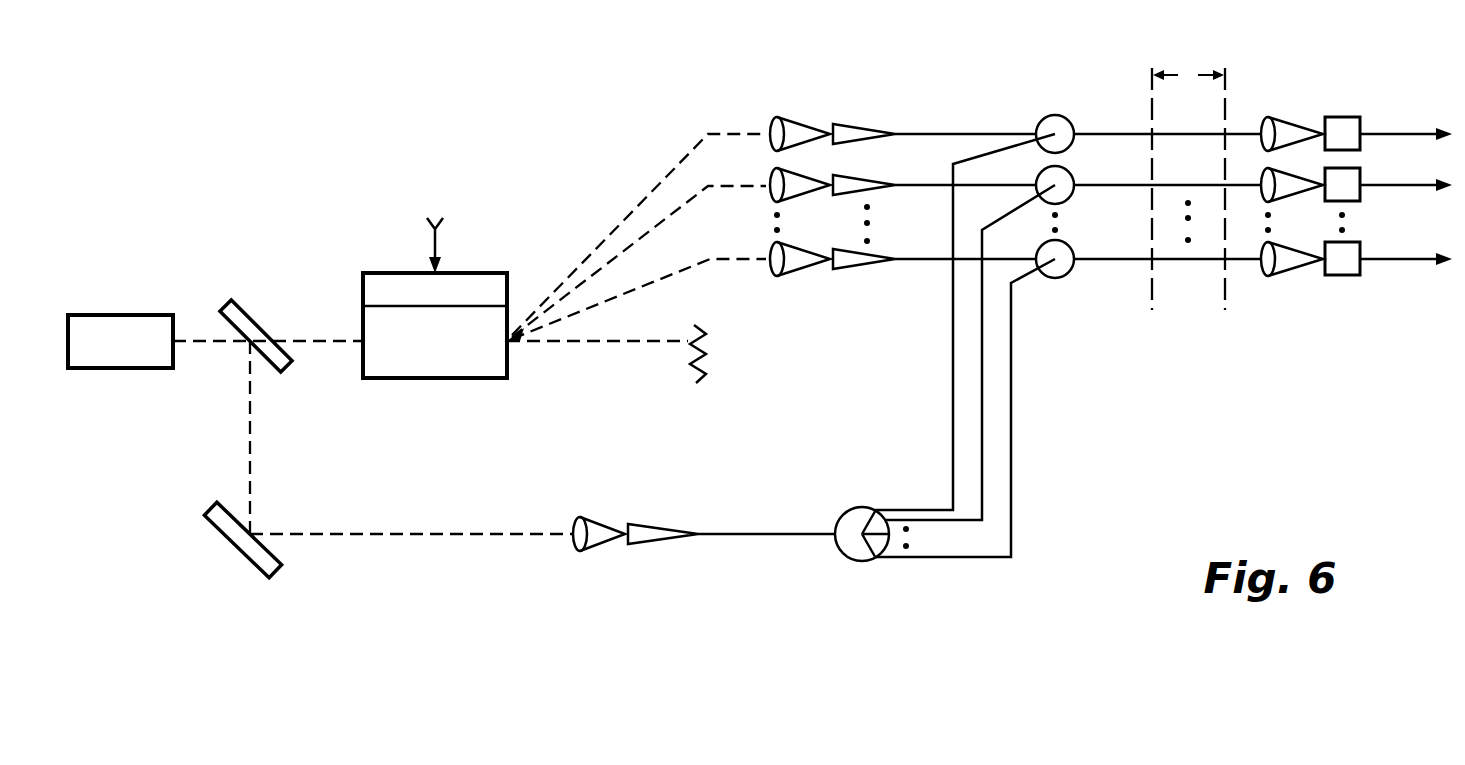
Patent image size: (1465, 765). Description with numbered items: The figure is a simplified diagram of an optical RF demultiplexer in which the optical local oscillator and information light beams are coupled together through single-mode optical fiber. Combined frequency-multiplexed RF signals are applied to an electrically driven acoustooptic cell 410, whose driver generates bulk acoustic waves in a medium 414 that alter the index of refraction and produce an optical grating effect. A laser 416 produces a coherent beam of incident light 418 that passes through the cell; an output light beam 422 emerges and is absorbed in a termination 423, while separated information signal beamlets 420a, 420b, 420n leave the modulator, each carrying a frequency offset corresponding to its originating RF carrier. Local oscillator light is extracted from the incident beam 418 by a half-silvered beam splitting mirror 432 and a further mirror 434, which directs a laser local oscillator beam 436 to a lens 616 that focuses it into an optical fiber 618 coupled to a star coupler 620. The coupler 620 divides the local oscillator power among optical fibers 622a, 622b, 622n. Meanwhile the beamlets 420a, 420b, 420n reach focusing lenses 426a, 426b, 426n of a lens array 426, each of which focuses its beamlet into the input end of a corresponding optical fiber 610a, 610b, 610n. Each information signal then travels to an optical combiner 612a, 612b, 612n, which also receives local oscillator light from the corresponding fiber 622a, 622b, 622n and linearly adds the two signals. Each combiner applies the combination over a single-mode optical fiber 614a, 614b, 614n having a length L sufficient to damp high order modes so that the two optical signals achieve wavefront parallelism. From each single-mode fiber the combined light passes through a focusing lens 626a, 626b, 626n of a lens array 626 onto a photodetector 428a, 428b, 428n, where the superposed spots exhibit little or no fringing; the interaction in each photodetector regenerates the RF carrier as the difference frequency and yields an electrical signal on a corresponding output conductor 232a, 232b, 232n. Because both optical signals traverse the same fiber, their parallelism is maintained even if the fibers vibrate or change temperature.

The acoustooptic cell 410 is at (432, 390).
The medium 414 is at (363, 372).
The laser 416 is at (118, 315).
The incident light beam 418 is at (310, 341).
The light beamlet 420a is at (688, 160).
The light beamlet 420b is at (650, 234).
The light beamlet 420n is at (647, 295).
The output light beam 422 is at (598, 345).
The termination 423 is at (706, 381).
The lens array 426 is at (777, 88).
The focusing lens 426a is at (768, 125).
The focusing lens 426b is at (766, 202).
The focusing lens 426n is at (766, 271).
The photodetector 428a is at (1343, 116).
The photodetector 428b is at (1362, 178).
The photodetector 428n is at (1340, 276).
The output conductor 232a is at (1378, 133).
The output conductor 232b is at (1372, 188).
The output conductor 232n is at (1372, 262).
The beam splitting mirror 432 is at (235, 300).
The mirror 434 is at (286, 565).
The laser local oscillator beam 436 is at (425, 539).
The optical fiber 610a is at (869, 125).
The optical fiber 610b is at (889, 191).
The optical fiber 610n is at (858, 270).
The optical combiner 612a is at (1055, 114).
The optical combiner 612b is at (1072, 175).
The optical combiner 612n is at (1050, 278).
The single-mode optical fiber 614a is at (1215, 133).
The single-mode optical fiber 614b is at (1215, 185).
The single-mode optical fiber 614n is at (1215, 263).
The lens 616 is at (582, 550).
The optical fiber 618 is at (666, 545).
The star coupler 620 is at (851, 558).
The optical fiber 622a is at (908, 508).
The optical fiber 622b is at (983, 492).
The optical fiber 622n is at (1013, 535).
The focusing lens array 626 is at (1268, 84).
The focusing lens 626a is at (1268, 116).
The focusing lens 626b is at (1290, 194).
The focusing lens 626n is at (1262, 276).